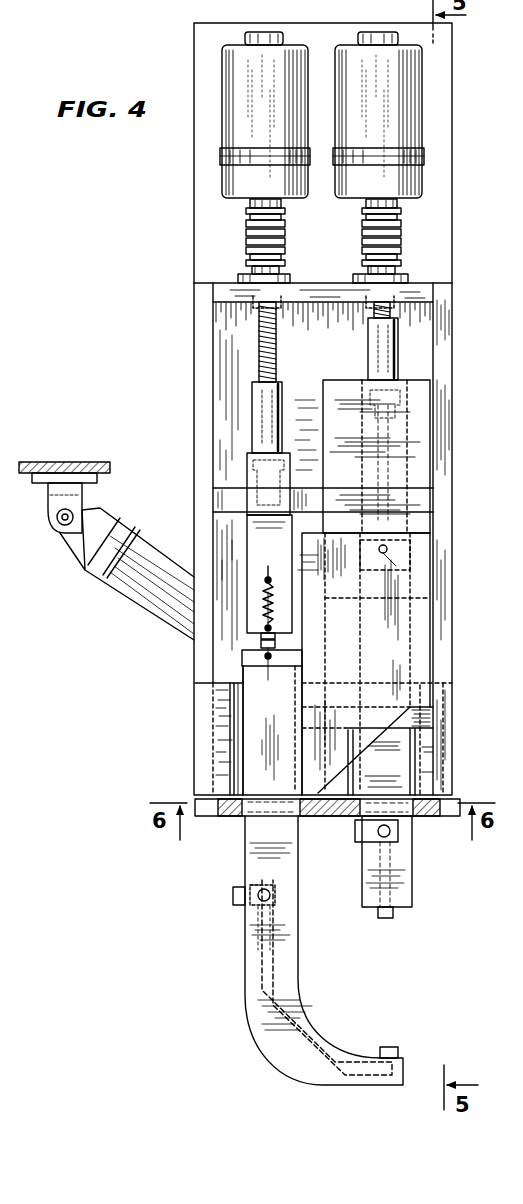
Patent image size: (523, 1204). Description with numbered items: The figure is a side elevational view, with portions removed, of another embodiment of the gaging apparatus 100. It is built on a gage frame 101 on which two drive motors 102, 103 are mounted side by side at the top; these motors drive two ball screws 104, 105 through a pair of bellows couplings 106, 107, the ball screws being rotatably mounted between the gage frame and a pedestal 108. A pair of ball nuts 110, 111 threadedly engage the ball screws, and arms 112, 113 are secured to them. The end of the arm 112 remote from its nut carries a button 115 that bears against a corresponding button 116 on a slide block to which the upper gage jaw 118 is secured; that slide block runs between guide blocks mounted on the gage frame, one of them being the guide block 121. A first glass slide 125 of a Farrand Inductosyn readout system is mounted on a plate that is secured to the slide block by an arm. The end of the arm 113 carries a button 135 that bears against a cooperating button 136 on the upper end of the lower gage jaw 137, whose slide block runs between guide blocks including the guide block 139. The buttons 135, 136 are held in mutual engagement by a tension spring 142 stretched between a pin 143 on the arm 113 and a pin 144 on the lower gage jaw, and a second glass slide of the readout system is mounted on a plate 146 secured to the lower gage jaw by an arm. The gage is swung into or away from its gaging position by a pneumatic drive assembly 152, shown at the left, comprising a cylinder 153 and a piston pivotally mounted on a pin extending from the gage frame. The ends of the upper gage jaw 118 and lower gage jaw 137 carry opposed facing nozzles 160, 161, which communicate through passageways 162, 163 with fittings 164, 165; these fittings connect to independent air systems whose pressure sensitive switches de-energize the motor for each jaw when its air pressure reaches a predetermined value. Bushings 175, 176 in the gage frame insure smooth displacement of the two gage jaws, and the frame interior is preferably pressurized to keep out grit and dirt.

The gaging apparatus 100 is at (168, 382).
The gage frame 101 is at (456, 352).
The drive motor 102 is at (426, 120).
The drive motor 103 is at (222, 127).
The ball screw 104 is at (436, 294).
The ball screw 105 is at (262, 323).
The bellows coupling 106 is at (362, 240).
The bellows coupling 107 is at (284, 240).
The pedestal 108 is at (231, 487).
The ball nut 110 is at (370, 341).
The ball nut 111 is at (283, 396).
The arm 112 is at (410, 420).
The arm 113 is at (244, 543).
The button 115 is at (420, 574).
The button 116 is at (410, 553).
The upper gage jaw 118 is at (415, 836).
The guide block 121 is at (443, 683).
The first glass slide 125 is at (421, 389).
The button 135 is at (275, 640).
The button 136 is at (275, 648).
The lower gage jaw 137 is at (244, 975).
The guide block 139 is at (231, 684).
The tension spring 142 is at (273, 600).
The pin 143 is at (270, 588).
The pin 144 is at (272, 721).
The plate 146 is at (421, 630).
The pneumatic drive assembly 152 is at (132, 606).
The cylinder 153 is at (172, 630).
The nozzle 160 is at (395, 912).
The nozzle 161 is at (395, 1050).
The passageway 162 is at (390, 867).
The passageway 163 is at (282, 1060).
The fitting 164 is at (372, 845).
The fitting 165 is at (232, 898).
The bushing 175 is at (345, 817).
The bushing 176 is at (243, 817).